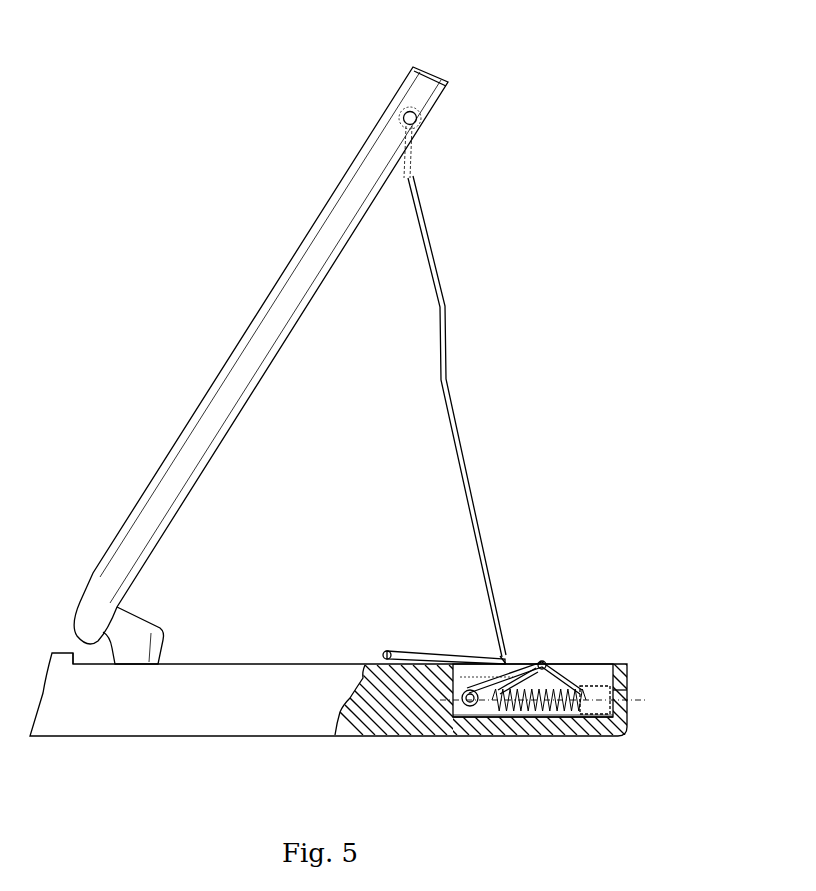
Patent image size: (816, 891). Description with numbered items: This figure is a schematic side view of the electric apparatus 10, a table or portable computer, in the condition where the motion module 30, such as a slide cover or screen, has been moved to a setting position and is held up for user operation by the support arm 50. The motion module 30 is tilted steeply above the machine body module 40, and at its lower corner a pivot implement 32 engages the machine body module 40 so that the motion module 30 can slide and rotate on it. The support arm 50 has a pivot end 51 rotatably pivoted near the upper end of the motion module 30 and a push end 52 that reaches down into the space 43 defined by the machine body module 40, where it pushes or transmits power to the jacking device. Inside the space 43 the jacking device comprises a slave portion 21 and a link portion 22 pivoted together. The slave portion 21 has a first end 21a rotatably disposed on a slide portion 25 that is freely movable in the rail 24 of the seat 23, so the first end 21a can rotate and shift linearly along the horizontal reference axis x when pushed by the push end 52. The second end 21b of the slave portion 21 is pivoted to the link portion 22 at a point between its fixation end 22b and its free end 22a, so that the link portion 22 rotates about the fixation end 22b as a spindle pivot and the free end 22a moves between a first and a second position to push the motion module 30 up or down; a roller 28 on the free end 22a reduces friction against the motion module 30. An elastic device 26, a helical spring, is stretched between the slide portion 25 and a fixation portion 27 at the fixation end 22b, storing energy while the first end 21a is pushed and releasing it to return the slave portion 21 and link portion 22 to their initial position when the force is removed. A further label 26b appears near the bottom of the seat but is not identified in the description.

The electric apparatus 10 is at (342, 165).
The motion module 30 is at (413, 83).
The pivot end 51 is at (403, 113).
The support arm 50 is at (448, 395).
The pivot implement 32 is at (140, 613).
The machine body module 40 is at (250, 738).
The first end 21a is at (443, 737).
The rail 24 is at (517, 736).
The space 43 is at (615, 663).
The slide portion 25 is at (483, 720).
The elastic device 26 is at (532, 723).
The fixation portion 27 is at (600, 717).
The seat 23 is at (587, 737).
The slave portion 21 is at (530, 658).
The second end 21b is at (548, 664).
The link portion 22 is at (508, 658).
The push end 52 is at (500, 660).
The free end 22a is at (405, 650).
The roller 28 is at (385, 650).
The fixation end 22b is at (630, 693).
The reference axis x is at (551, 698).
The spring seat 26b is at (627, 723).